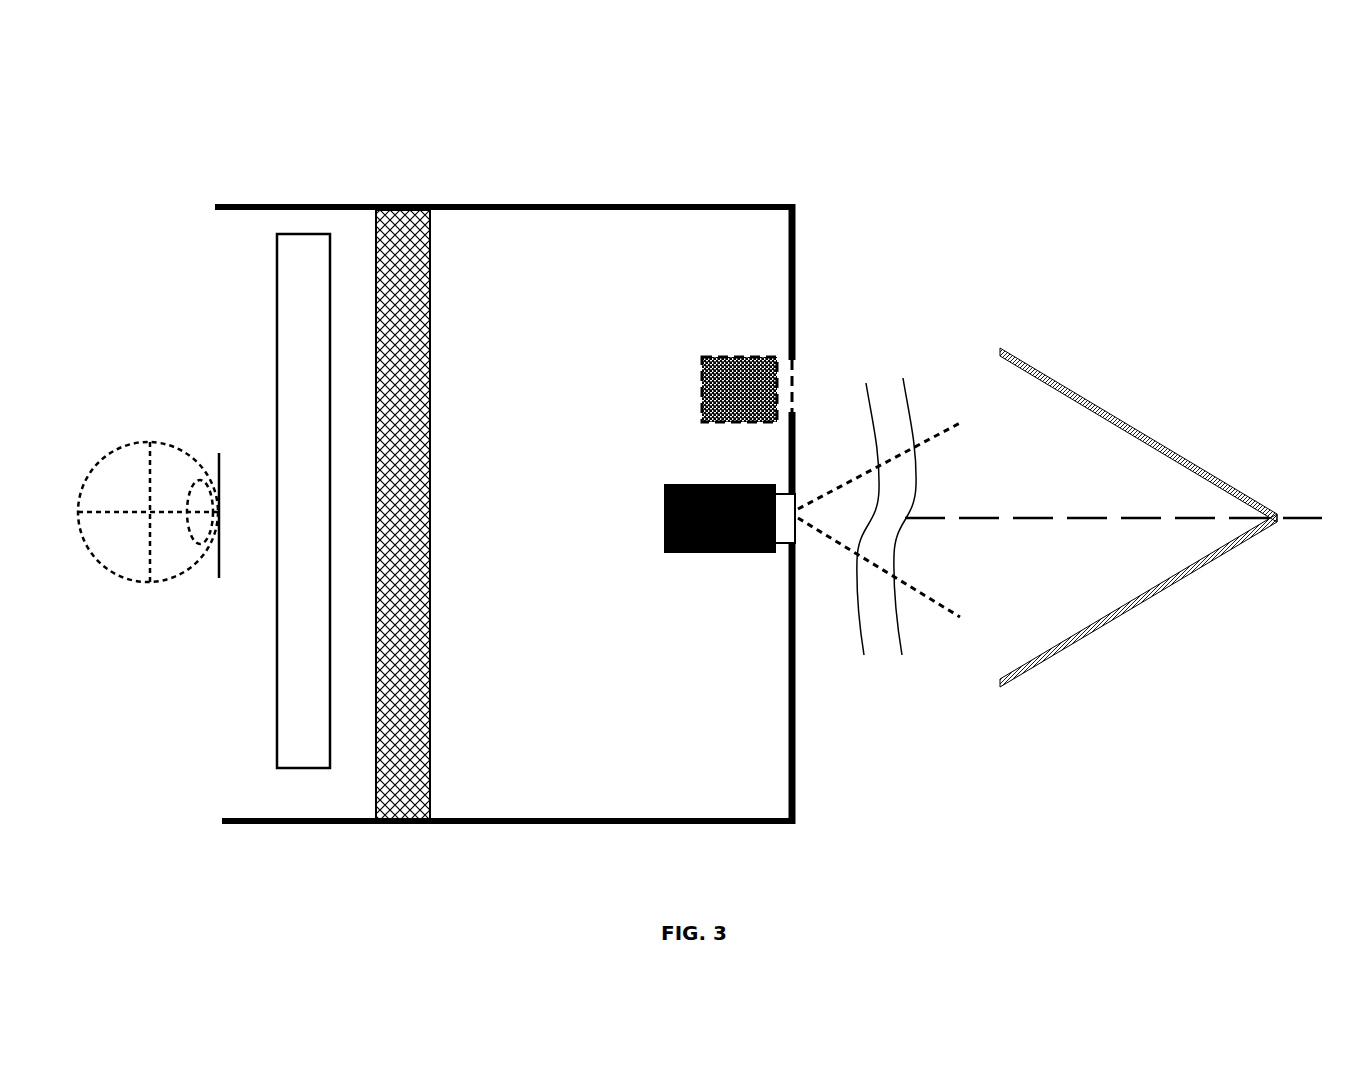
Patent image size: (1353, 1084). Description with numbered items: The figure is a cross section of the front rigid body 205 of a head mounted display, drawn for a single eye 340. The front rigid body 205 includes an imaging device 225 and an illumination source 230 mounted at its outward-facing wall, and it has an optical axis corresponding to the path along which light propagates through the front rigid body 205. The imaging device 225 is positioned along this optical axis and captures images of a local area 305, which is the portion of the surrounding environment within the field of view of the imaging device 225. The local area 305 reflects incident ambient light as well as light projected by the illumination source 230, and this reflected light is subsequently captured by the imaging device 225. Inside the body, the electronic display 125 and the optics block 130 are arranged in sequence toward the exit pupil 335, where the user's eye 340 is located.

The electronic display 125 is at (430, 255).
The optics block 130 is at (320, 777).
The front rigid body 205 is at (760, 824).
The imaging device 225 is at (667, 485).
The illumination source 230 is at (742, 355).
The local area 305 is at (1122, 618).
The exit pupil 335 is at (215, 450).
The eye 340 is at (113, 577).